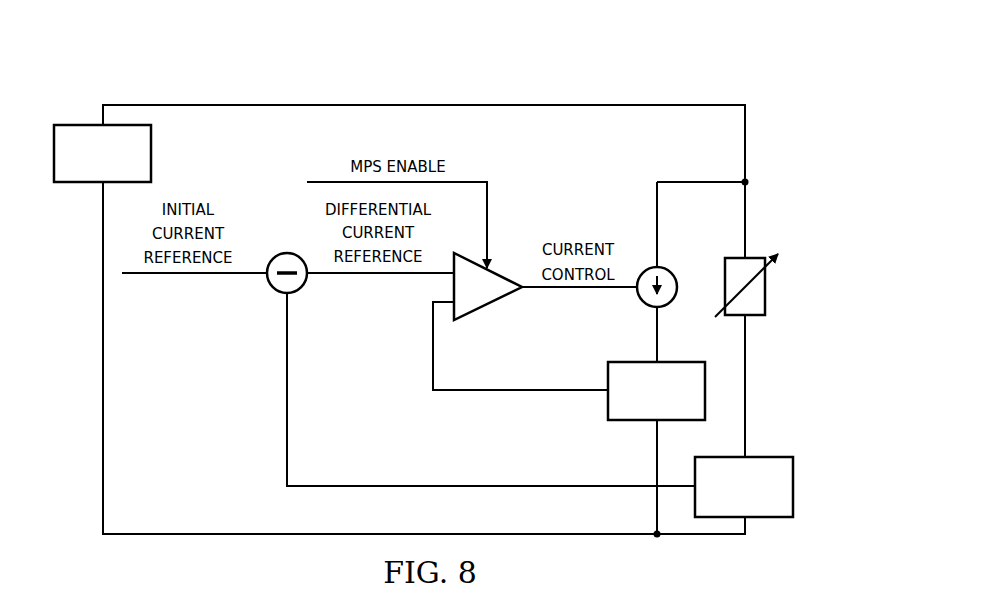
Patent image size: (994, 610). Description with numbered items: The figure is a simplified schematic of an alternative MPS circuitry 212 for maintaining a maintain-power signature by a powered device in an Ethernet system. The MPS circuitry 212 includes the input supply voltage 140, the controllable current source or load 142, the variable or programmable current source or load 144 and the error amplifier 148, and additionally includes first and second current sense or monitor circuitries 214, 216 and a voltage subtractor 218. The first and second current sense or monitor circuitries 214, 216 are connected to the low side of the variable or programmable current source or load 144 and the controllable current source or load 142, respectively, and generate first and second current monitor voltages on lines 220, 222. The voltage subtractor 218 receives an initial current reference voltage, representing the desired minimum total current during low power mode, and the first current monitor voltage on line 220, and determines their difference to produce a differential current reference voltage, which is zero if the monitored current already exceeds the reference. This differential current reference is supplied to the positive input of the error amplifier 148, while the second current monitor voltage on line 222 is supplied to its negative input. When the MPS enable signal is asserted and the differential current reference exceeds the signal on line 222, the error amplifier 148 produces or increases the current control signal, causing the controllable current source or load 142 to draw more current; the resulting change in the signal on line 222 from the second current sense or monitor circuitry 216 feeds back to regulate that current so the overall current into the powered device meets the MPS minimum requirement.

The input supply voltage 140 is at (73, 124).
The controllable current source or load 142 is at (643, 301).
The variable or programmable current source or load 144 is at (765, 296).
The error amplifier 148 is at (489, 304).
The MPS circuitry 212 is at (602, 70).
The first current sense or monitor circuitry 214 is at (775, 518).
The second current sense or monitor circuitry 216 is at (628, 421).
The voltage subtractor 218 is at (280, 253).
The line 220 is at (286, 388).
The line 222 is at (432, 347).